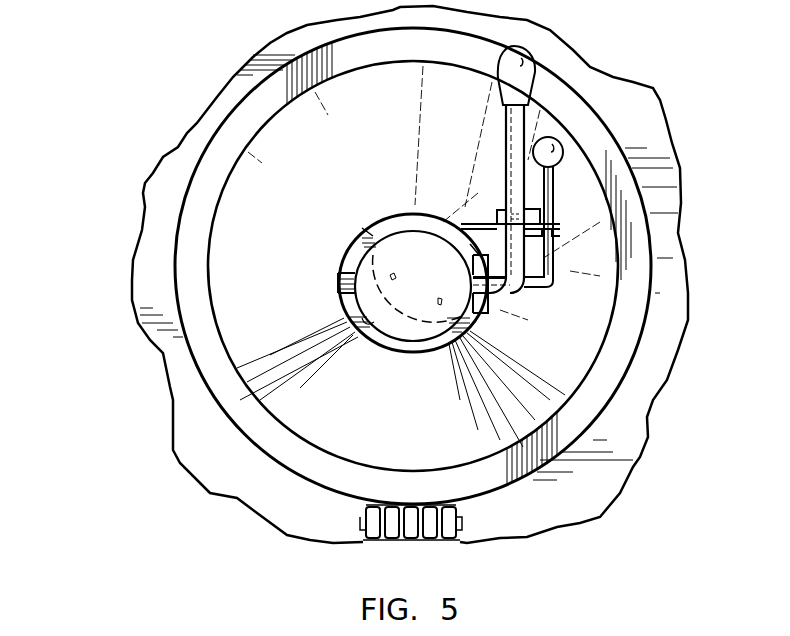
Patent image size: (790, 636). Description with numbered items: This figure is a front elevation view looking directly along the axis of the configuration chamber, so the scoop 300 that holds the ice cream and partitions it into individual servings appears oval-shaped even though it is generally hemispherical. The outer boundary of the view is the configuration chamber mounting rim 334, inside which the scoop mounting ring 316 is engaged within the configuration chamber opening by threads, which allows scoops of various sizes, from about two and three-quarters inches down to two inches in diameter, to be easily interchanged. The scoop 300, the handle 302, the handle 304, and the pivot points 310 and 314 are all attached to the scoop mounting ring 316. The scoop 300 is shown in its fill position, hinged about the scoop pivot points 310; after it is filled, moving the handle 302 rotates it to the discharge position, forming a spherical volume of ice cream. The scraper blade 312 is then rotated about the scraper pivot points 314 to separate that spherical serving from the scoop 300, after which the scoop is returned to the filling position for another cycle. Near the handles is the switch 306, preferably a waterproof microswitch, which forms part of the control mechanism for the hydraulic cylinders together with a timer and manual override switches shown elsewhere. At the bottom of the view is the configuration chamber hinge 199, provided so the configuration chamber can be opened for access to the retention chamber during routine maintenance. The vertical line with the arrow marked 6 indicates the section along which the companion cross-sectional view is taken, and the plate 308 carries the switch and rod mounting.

The configuration chamber hinge 199 is at (447, 535).
The scoop 300 is at (438, 303).
The handle 302 is at (506, 126).
The handle 304 is at (547, 212).
The switch 306 is at (499, 215).
The mounting plate 308 is at (556, 228).
The scoop pivot points 310 is at (340, 292).
The scraper blade 312 is at (368, 317).
The scraper pivot points 314 is at (355, 281).
The scoop mounting ring 316 is at (373, 233).
The configuration chamber mounting rim 334 is at (610, 127).
The section line 6- 6 is at (413, 0).